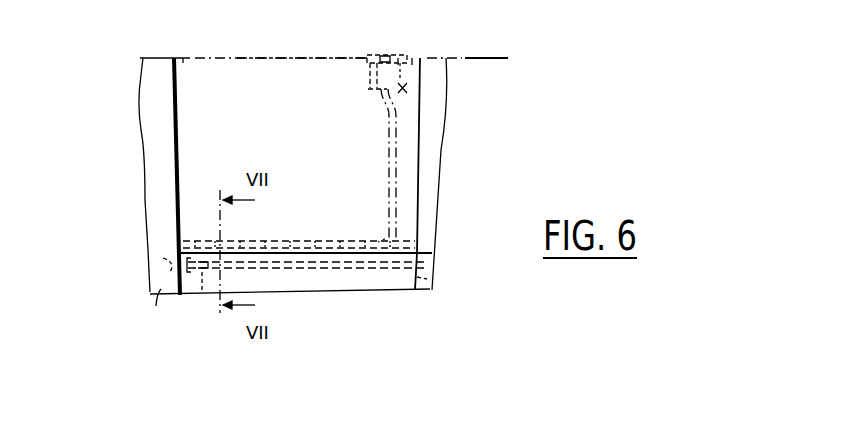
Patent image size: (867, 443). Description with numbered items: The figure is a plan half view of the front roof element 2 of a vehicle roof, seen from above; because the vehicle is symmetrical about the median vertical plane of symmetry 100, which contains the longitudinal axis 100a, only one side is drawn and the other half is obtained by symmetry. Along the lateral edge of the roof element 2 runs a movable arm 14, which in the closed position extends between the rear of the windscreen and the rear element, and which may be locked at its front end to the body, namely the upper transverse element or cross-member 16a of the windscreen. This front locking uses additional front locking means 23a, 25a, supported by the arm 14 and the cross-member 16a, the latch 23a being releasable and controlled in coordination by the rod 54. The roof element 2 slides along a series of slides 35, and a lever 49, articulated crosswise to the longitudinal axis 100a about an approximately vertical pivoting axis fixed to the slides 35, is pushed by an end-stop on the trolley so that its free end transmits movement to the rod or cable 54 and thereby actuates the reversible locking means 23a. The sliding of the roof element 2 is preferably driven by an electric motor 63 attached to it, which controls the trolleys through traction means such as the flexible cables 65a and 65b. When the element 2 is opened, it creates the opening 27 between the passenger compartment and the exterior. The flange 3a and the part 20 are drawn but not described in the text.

The roof element 2 is at (358, 232).
The frame flange 3a is at (446, 117).
The movable arm 14 is at (430, 276).
The upper transverse element of the windscreen 16a is at (163, 293).
The sealing body 20 is at (141, 218).
The front locking means 23a is at (203, 295).
The front locking means 25a is at (160, 254).
The opening 27 is at (222, 85).
The series of slides 35 is at (296, 240).
The lever 49 is at (260, 241).
The rod 54 is at (305, 263).
The electric motor 63 is at (430, 98).
The flexible cable 65a is at (386, 130).
The flexible cable 65b is at (385, 188).
The median vertical plane of symmetry 100 is at (492, 57).
The longitudinal axis 100a is at (350, 57).